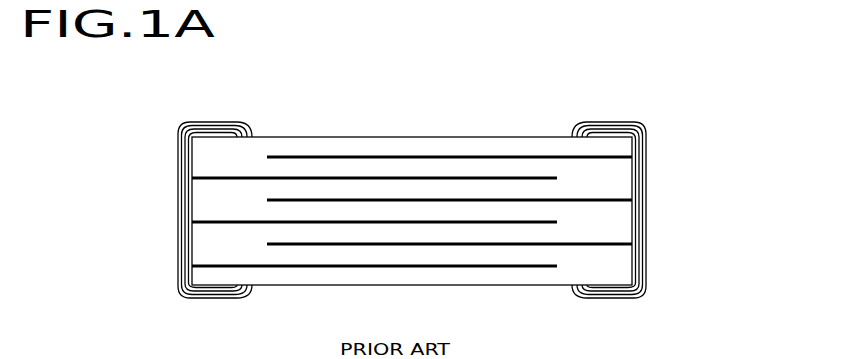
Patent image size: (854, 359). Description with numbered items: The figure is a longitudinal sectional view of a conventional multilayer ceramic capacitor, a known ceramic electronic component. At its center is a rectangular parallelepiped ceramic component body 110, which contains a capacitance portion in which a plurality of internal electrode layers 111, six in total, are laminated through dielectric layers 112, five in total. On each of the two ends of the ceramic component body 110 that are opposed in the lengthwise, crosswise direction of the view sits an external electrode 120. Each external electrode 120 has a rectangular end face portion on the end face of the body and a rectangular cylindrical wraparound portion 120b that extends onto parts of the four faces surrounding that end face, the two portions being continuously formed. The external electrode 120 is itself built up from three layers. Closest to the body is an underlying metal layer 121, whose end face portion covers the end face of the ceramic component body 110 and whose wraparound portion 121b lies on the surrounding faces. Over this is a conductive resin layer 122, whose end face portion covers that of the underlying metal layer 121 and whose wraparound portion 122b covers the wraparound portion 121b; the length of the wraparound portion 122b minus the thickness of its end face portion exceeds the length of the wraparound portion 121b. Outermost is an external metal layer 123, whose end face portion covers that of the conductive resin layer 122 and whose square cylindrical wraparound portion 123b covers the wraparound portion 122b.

The ceramic component body 110 is at (383, 137).
The internal electrode layers 111 is at (447, 152).
The dielectric layers 112 is at (500, 172).
The external electrode 120 is at (178, 191).
The underlying metal layer 121 is at (181, 221).
The conductive resin layer 122 is at (185, 245).
The external metal layer 123 is at (189, 268).
The wraparound portion of external electrode 120b is at (213, 122).
The wraparound portion of underlying metal layer 121b is at (180, 300).
The wraparound portion of conductive resin layer 122b is at (212, 300).
The wraparound portion of external metal layer 123b is at (240, 300).